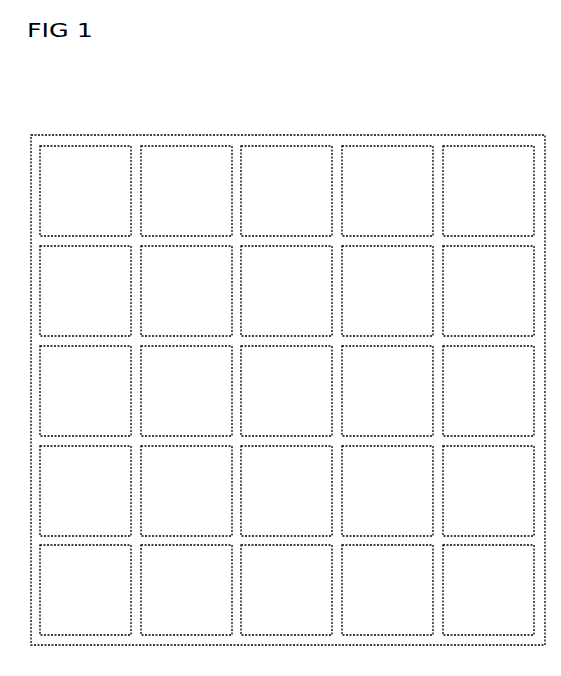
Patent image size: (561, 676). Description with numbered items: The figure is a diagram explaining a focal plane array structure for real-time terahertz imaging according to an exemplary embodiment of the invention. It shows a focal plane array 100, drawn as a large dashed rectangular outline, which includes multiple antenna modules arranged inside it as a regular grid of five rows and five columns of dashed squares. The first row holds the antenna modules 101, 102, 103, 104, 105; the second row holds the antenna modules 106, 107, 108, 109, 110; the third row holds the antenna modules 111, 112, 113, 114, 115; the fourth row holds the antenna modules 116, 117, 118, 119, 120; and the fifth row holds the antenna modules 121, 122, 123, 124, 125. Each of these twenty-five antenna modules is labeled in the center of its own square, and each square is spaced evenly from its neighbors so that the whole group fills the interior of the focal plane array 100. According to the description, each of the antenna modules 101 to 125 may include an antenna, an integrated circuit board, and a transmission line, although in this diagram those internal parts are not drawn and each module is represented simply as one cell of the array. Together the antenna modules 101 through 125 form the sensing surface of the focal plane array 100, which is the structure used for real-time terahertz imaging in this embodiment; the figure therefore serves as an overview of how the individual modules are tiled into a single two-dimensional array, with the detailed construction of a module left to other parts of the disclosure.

The focal plane array 100 is at (316, 103).
The antenna module 101 is at (85, 191).
The antenna module 102 is at (186, 191).
The antenna module 103 is at (286, 191).
The antenna module 104 is at (387, 191).
The antenna module 105 is at (488, 191).
The antenna module 106 is at (85, 291).
The antenna module 107 is at (186, 291).
The antenna module 108 is at (286, 291).
The antenna module 109 is at (387, 291).
The antenna module 110 is at (488, 291).
The antenna module 111 is at (85, 391).
The antenna module 112 is at (186, 391).
The antenna module 113 is at (286, 391).
The antenna module 114 is at (387, 391).
The antenna module 115 is at (488, 391).
The antenna module 116 is at (85, 491).
The antenna module 117 is at (186, 491).
The antenna module 118 is at (286, 491).
The antenna module 119 is at (387, 491).
The antenna module 120 is at (488, 491).
The antenna module 121 is at (85, 590).
The antenna module 122 is at (186, 590).
The antenna module 123 is at (286, 590).
The antenna module 124 is at (387, 590).
The antenna module 125 is at (488, 590).